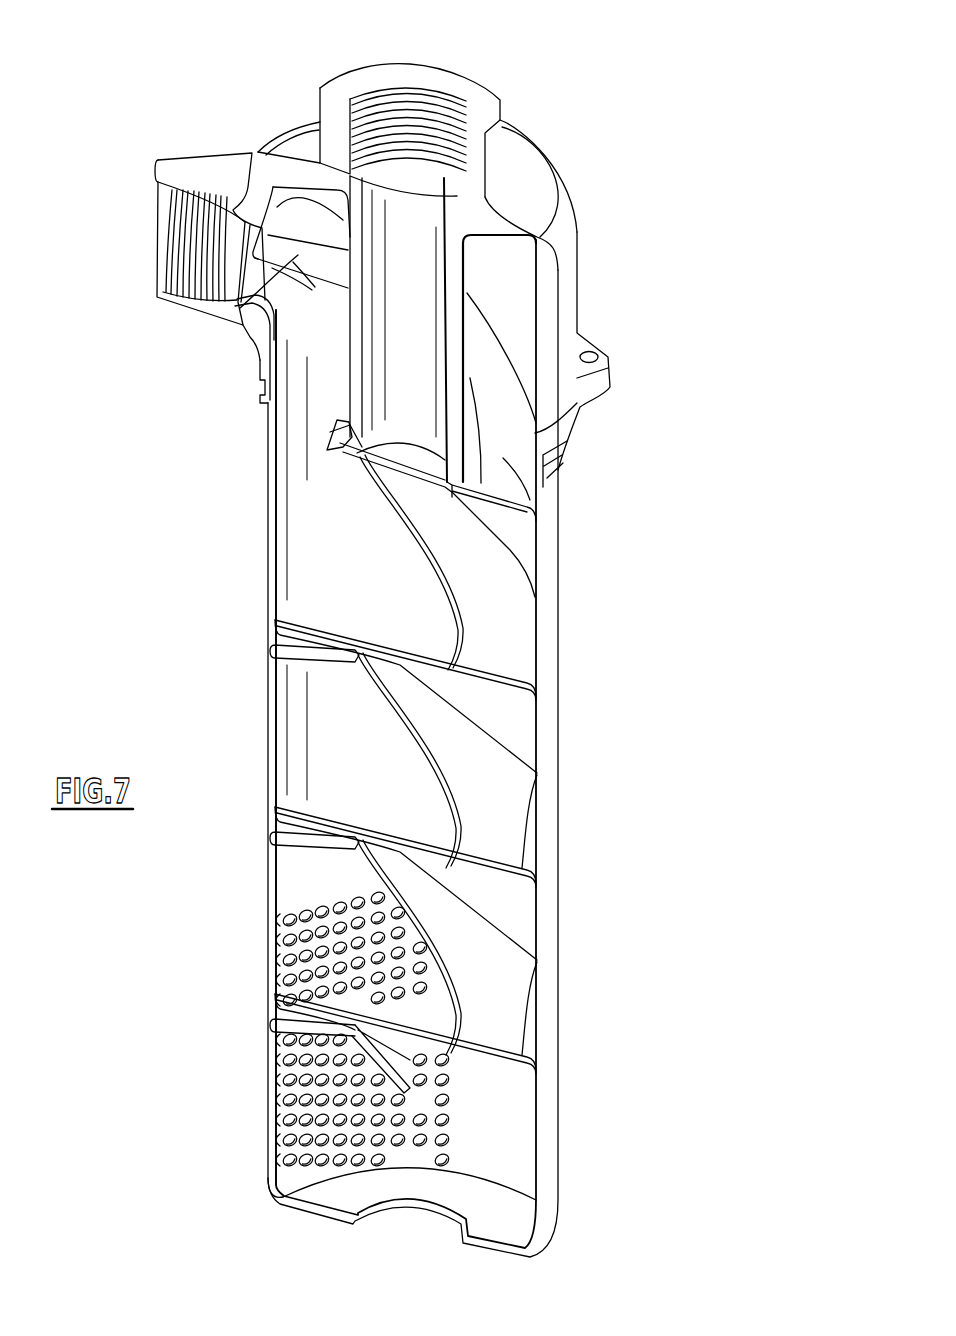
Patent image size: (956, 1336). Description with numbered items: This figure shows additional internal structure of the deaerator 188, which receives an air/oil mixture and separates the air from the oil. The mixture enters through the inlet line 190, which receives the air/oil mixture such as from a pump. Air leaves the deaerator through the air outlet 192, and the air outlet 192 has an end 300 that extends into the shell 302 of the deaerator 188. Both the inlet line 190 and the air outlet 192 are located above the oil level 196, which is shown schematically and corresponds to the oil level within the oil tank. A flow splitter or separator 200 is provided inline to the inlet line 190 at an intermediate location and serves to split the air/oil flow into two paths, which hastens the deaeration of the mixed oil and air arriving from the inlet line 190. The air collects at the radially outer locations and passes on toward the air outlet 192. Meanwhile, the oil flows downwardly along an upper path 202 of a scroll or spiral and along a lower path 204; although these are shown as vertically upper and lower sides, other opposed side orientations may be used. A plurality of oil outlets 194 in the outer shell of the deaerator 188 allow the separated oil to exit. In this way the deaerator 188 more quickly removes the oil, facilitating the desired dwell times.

The deaerator 188 is at (586, 63).
The inlet line 190 is at (195, 253).
The air outlet 192 is at (400, 113).
The oil outlets 194 is at (295, 905).
The oil level 196 is at (290, 868).
The flow splitter 200 is at (262, 285).
The upper path 202 is at (503, 457).
The lower path 204 is at (262, 382).
The end of air outlet 300 is at (365, 453).
The shell 302 is at (577, 302).